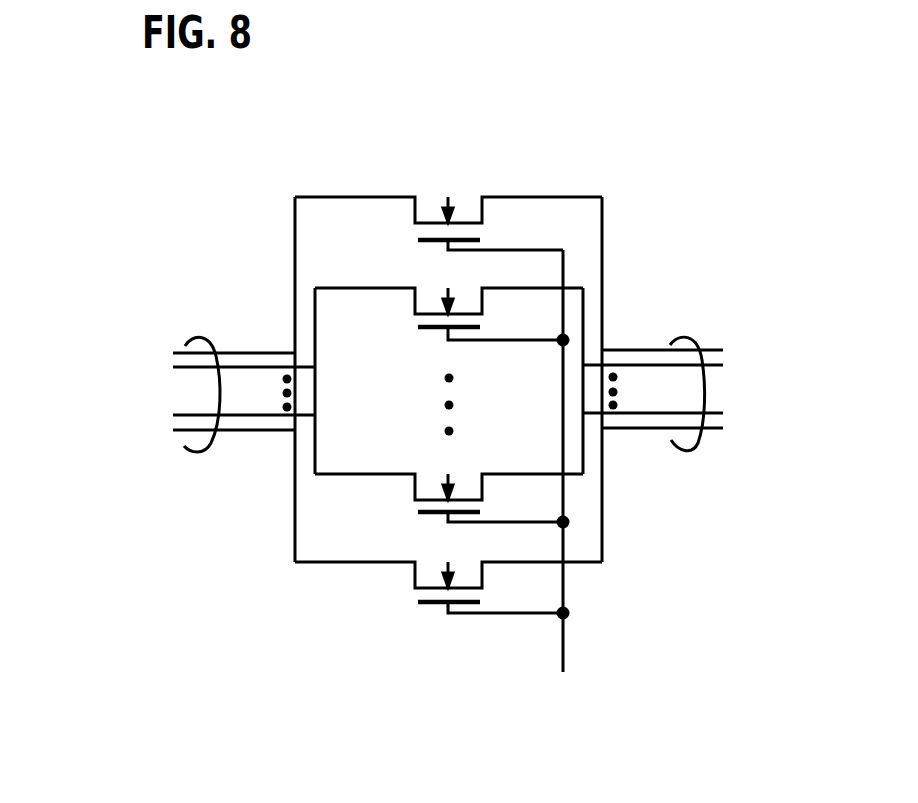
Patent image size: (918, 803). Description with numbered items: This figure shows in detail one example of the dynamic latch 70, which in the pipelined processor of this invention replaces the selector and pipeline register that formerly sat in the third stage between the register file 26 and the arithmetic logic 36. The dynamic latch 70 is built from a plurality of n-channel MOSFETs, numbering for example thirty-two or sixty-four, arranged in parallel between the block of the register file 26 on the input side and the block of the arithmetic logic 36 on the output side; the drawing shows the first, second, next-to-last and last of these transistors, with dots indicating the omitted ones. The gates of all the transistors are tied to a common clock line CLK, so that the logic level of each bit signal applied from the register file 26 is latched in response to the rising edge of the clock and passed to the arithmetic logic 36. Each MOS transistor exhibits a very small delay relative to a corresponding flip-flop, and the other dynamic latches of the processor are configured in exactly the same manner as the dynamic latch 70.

The dynamic latch 70 is at (487, 645).
The register file 26 is at (166, 394).
The arithmetic logic 36 is at (712, 394).